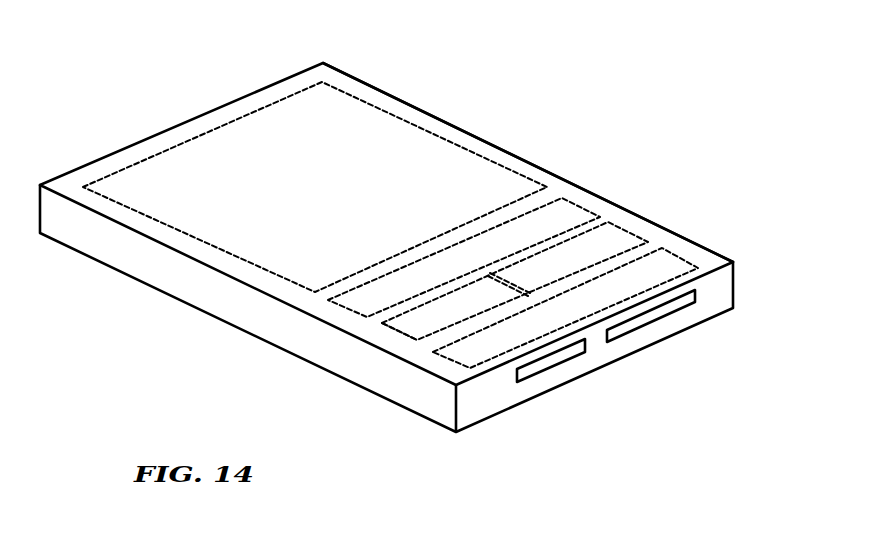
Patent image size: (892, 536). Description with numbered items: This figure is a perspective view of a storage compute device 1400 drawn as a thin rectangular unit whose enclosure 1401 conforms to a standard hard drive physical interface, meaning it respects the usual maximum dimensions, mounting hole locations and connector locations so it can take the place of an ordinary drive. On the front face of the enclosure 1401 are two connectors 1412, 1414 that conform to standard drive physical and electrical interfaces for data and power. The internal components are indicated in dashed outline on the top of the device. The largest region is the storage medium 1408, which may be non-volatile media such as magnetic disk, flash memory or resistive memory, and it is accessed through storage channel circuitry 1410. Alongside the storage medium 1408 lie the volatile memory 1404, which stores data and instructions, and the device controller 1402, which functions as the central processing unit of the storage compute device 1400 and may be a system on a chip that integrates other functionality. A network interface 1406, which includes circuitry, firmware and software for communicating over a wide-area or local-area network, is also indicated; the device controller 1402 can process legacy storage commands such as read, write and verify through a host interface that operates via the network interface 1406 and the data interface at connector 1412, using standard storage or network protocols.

The storage compute device 1400 is at (213, 320).
The enclosure 1401 is at (498, 147).
The device controller 1402 is at (633, 235).
The volatile memory 1404 is at (572, 203).
The network interface 1406 is at (398, 333).
The storage medium 1408 is at (310, 82).
The storage channel circuitry 1410 is at (685, 260).
The connector 1412 is at (555, 370).
The connector 1414 is at (667, 317).